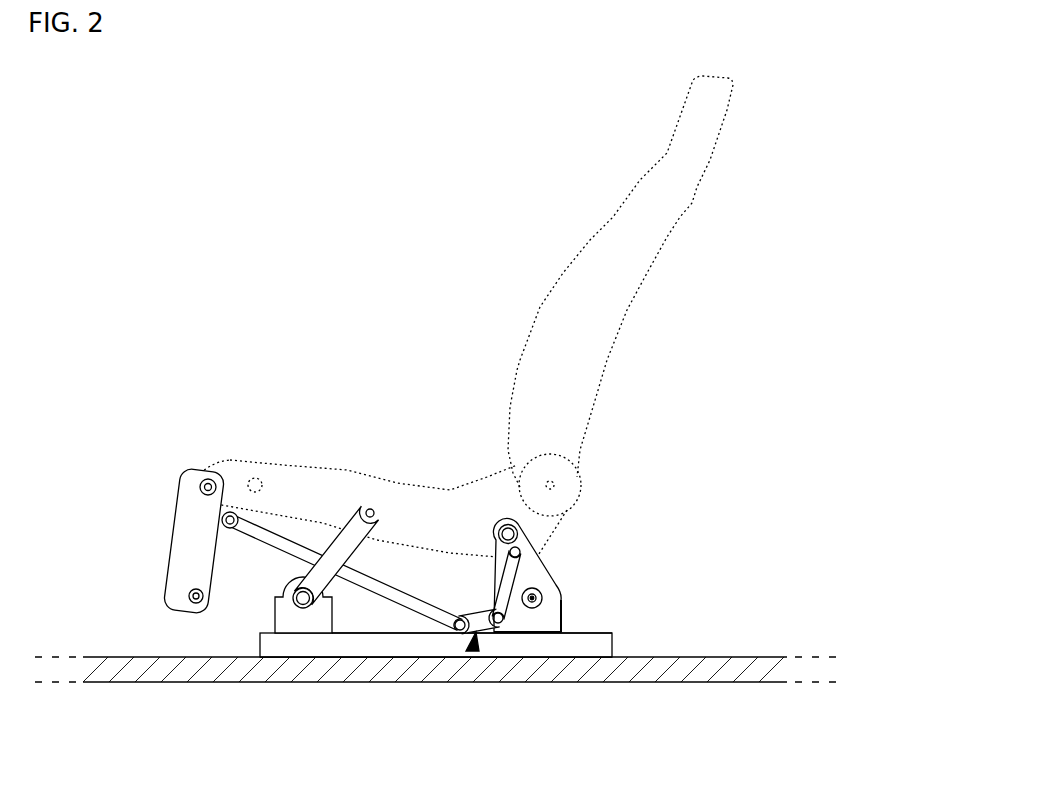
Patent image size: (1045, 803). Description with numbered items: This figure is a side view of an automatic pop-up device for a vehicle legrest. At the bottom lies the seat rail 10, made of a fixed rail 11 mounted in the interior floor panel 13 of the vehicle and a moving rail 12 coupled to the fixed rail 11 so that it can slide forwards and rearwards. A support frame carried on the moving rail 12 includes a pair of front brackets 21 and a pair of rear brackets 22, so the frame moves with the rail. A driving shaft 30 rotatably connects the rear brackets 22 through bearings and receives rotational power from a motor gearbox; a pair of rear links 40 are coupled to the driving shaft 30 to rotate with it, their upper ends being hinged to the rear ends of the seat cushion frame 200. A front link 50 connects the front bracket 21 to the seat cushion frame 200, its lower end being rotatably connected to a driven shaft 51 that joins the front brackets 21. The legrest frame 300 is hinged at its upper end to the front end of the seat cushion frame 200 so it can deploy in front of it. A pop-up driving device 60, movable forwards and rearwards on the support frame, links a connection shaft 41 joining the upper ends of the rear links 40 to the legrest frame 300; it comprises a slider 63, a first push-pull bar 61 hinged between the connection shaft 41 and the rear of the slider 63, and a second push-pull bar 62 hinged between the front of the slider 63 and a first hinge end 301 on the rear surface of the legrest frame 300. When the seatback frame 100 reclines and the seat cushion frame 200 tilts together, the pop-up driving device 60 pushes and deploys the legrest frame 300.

The seat rail 10 is at (320, 724).
The fixed rail 11 is at (312, 647).
The moving rail 12 is at (328, 633).
The interior floor panel 13 is at (683, 657).
The front bracket 21 is at (290, 622).
The rear bracket 22 is at (562, 625).
The driving shaft 30 is at (540, 585).
The rear link 40 is at (552, 592).
The connection shaft 41 is at (507, 520).
The front link 50 is at (337, 543).
The driven shaft 51 is at (283, 597).
The pop-up driving device 60 is at (475, 652).
The first push-pull bar 61 is at (490, 588).
The second push-pull bar 62 is at (420, 612).
The slider 63 is at (493, 626).
The seatback frame 100 is at (628, 307).
The seat cushion frame 200 is at (283, 465).
The legrest frame 300 is at (175, 512).
The first hinge end 301 is at (232, 510).